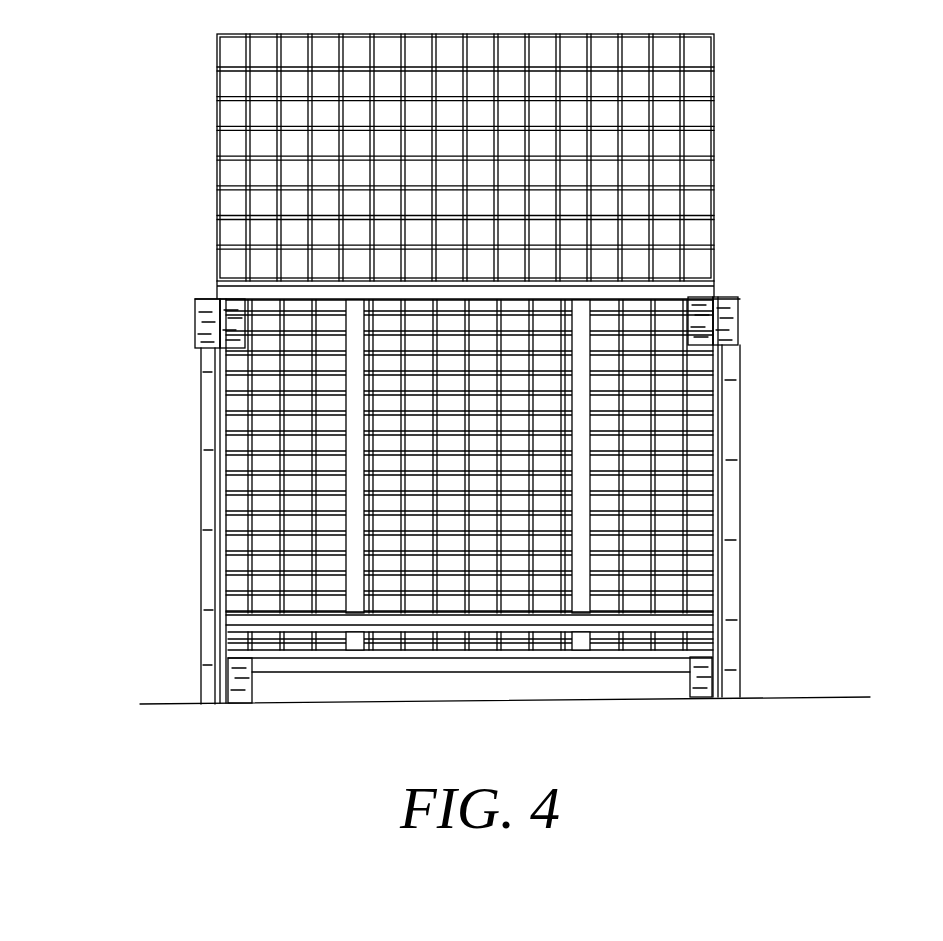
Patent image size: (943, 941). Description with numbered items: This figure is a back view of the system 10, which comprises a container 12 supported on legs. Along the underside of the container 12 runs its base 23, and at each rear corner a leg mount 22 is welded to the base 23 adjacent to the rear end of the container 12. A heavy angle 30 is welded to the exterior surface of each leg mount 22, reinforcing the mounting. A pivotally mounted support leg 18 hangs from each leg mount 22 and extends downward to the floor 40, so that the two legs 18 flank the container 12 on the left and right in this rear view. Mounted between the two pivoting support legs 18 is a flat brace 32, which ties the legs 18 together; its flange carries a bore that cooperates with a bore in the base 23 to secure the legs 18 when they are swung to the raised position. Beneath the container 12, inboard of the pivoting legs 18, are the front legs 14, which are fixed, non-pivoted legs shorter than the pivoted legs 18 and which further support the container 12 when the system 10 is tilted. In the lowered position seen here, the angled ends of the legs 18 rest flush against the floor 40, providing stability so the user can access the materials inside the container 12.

The system 10 is at (126, 97).
The container 12 is at (258, 154).
The front leg 14 is at (252, 694).
The support leg 18 is at (207, 644).
The leg mount 22 is at (228, 322).
The base 23 is at (713, 291).
The heavy angle 30 is at (205, 338).
The flat brace 32 is at (537, 620).
The floor 40 is at (178, 704).